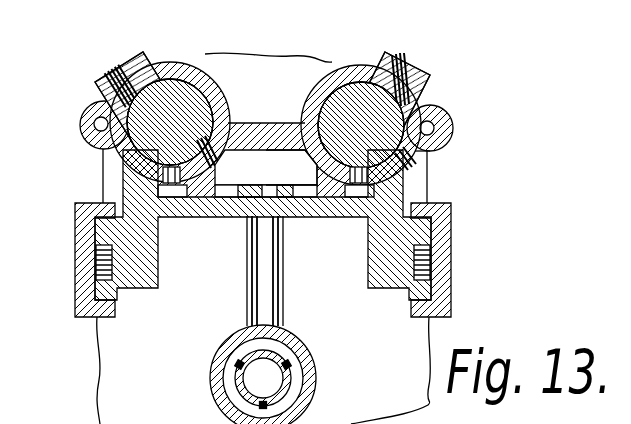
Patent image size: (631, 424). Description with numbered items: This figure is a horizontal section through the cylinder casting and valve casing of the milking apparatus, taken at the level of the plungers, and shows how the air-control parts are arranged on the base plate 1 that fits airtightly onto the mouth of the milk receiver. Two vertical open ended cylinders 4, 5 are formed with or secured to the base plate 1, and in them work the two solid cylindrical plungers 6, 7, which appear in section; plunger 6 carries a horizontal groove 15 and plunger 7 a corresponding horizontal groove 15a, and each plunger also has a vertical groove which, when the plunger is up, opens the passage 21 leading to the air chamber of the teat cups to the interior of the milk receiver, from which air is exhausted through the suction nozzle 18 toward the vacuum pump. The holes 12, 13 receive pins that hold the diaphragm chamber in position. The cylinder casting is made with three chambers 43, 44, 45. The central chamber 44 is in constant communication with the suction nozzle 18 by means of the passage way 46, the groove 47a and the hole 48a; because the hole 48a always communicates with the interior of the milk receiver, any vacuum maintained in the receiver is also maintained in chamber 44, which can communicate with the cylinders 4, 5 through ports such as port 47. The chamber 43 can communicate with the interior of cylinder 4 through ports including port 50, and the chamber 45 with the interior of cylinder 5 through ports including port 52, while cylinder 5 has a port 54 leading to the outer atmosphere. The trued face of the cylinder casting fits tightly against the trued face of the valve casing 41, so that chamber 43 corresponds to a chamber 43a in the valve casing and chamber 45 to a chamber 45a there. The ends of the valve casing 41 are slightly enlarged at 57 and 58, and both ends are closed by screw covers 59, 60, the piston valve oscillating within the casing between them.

The base plate 1 is at (264, 238).
The cylinder 4 is at (173, 70).
The cylinder 5 is at (318, 88).
The plunger 6 is at (170, 122).
The plunger 7 is at (358, 100).
The hole 12 is at (94, 123).
The hole 13 is at (433, 127).
The horizontal groove 15 is at (165, 140).
The horizontal groove 15a is at (340, 163).
The suction nozzle 18 is at (238, 385).
The passage 21 is at (131, 72).
The valve casing 41 is at (248, 217).
The chamber 43 is at (163, 186).
The chamber 43a is at (170, 199).
The central chamber 44 is at (265, 173).
The chamber 45 is at (323, 155).
The chamber 45a is at (358, 199).
The passage way 46 is at (272, 278).
The port 47 is at (196, 142).
The groove 47a is at (297, 368).
The hole 48a is at (283, 367).
The port 50 is at (123, 155).
The port 52 is at (405, 181).
The port 54 is at (431, 148).
The enlarged end 57 is at (96, 258).
The enlarged end 58 is at (432, 265).
The screw cover 59 is at (80, 205).
The screw cover 60 is at (448, 219).